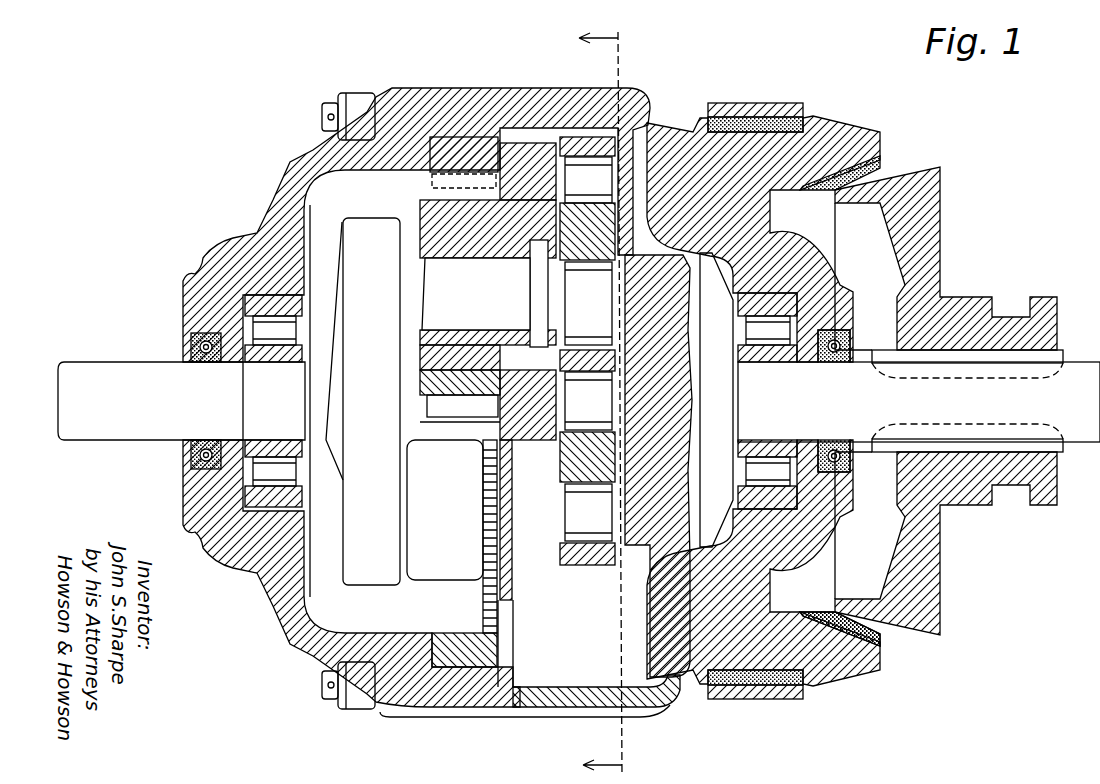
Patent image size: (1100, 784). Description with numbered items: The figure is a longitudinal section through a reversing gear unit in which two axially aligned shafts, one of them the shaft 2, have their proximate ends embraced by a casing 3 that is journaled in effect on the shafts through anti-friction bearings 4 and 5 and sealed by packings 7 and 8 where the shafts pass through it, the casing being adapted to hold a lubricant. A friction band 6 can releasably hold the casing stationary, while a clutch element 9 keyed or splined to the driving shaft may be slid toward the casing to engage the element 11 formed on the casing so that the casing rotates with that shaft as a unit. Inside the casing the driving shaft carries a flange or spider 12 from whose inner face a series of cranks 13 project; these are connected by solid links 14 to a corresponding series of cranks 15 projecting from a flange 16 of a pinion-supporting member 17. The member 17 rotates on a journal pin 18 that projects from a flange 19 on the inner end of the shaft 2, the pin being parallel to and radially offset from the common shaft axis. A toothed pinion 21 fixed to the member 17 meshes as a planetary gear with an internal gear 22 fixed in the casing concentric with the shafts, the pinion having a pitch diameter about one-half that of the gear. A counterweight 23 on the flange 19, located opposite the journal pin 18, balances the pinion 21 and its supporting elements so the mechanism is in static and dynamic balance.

The shaft 2 is at (92, 364).
The casing 3 is at (295, 186).
The anti-friction bearing 4 is at (774, 339).
The anti-friction bearing 5 is at (279, 339).
The friction band 6 is at (748, 104).
The packing 7 is at (855, 452).
The packing 8 is at (194, 455).
The clutch element 9 is at (945, 296).
The clutch element 11 is at (885, 645).
The flange or spider 12 is at (662, 550).
The crank 13 is at (600, 300).
The link 14 is at (592, 243).
The crank 15 is at (600, 190).
The flange 16 is at (515, 162).
The pinion-supporting member 17 is at (445, 233).
The journal pin 18 is at (486, 300).
The flange 19 is at (372, 570).
The toothed pinion 21 is at (466, 400).
The internal gear 22 is at (450, 138).
The counterweight 23 is at (456, 548).